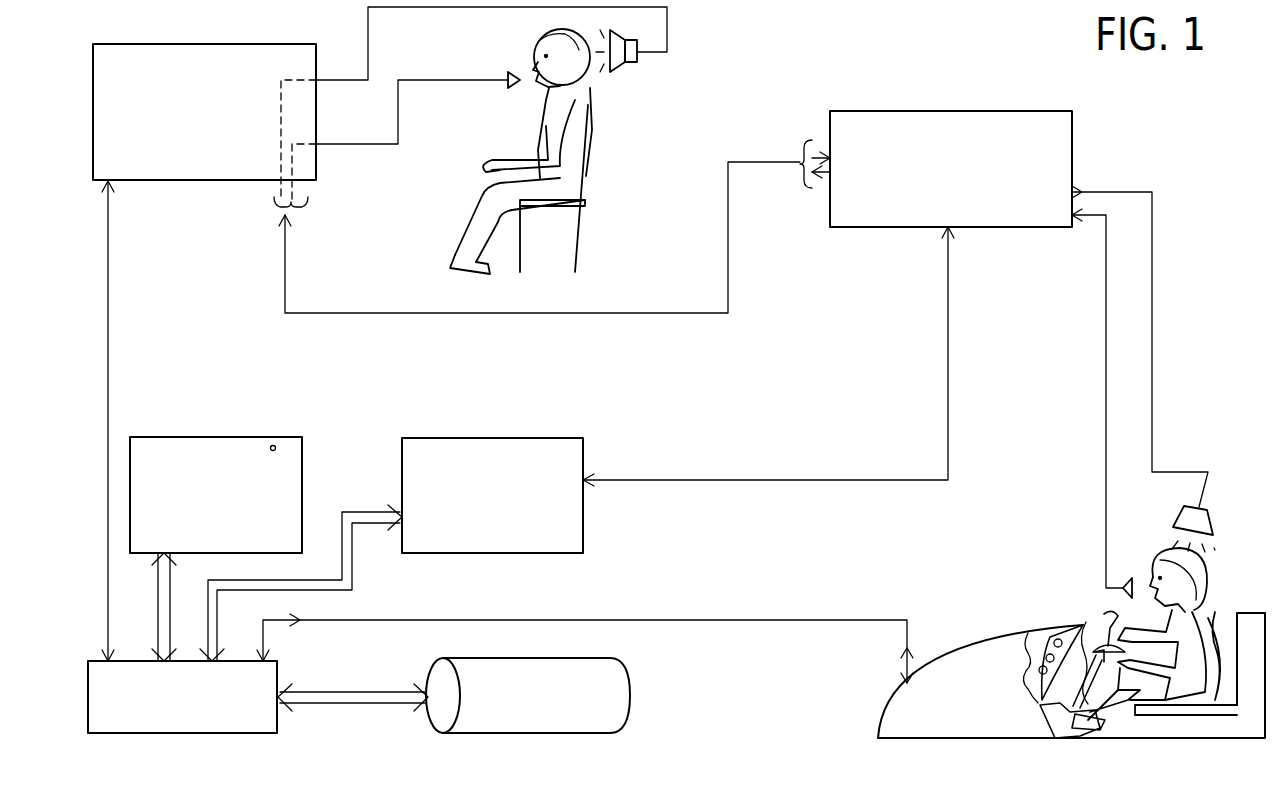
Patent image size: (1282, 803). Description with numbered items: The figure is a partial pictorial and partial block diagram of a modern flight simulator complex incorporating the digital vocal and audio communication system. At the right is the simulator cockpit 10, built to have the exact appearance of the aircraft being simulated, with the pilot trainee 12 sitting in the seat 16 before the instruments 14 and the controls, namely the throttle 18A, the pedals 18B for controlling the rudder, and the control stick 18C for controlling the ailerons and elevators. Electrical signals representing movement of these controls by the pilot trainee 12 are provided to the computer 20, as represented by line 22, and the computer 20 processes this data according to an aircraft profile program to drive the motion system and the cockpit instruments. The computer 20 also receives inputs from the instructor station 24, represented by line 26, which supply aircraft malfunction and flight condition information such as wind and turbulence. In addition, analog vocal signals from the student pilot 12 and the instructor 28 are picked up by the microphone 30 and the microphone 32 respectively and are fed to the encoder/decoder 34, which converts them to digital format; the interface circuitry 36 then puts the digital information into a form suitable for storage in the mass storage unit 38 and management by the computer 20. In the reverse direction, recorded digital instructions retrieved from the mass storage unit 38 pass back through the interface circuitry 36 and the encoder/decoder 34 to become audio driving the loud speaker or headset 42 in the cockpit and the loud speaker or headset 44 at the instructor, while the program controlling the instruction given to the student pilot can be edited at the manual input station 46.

The simulator cockpit 10 is at (1006, 627).
The pilot trainee 12 is at (1210, 568).
The instruments 14 is at (1064, 622).
The seat 16 is at (1215, 620).
The throttle 18A is at (1084, 616).
The pedals 18B is at (1046, 722).
The control stick 18C is at (1090, 654).
The computer 20 is at (175, 692).
The line 22 is at (807, 620).
The instructor station 24 is at (185, 159).
The line 26 is at (108, 288).
The instructor 28 is at (487, 205).
The microphone 30 is at (1135, 581).
The microphone 32 is at (512, 70).
The encoder/decoder 34 is at (936, 213).
The interface circuitry 36 is at (462, 525).
The mass storage unit 38 is at (528, 696).
The loud speaker or headset 42 is at (1212, 520).
The loud speaker or headset 44 is at (636, 68).
The manual input station 46 is at (190, 545).